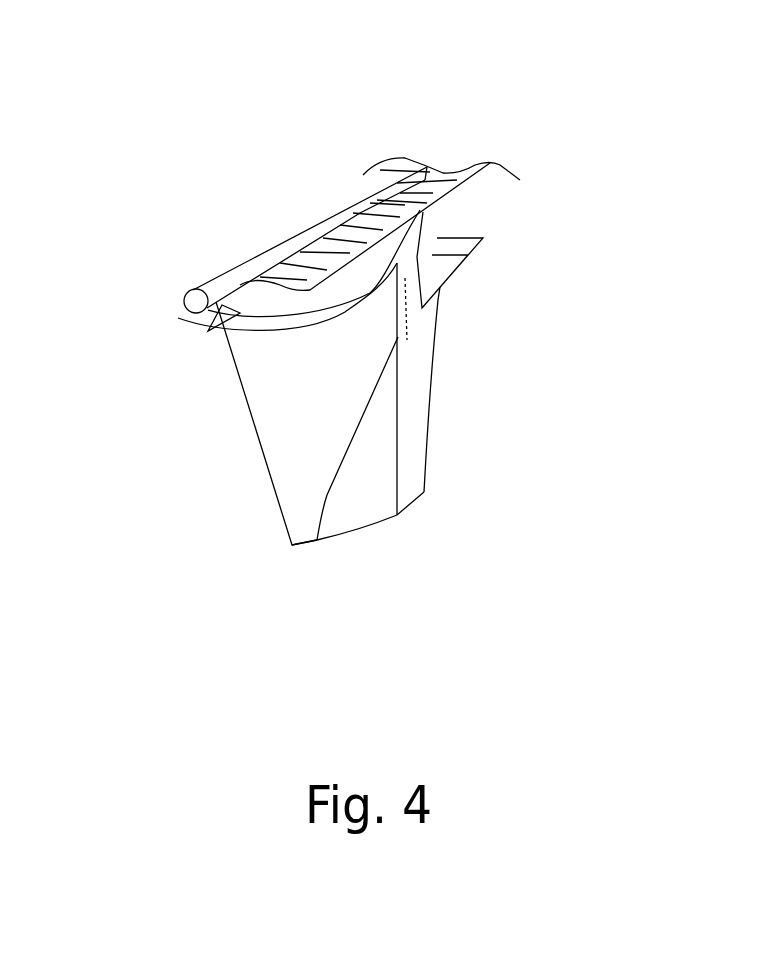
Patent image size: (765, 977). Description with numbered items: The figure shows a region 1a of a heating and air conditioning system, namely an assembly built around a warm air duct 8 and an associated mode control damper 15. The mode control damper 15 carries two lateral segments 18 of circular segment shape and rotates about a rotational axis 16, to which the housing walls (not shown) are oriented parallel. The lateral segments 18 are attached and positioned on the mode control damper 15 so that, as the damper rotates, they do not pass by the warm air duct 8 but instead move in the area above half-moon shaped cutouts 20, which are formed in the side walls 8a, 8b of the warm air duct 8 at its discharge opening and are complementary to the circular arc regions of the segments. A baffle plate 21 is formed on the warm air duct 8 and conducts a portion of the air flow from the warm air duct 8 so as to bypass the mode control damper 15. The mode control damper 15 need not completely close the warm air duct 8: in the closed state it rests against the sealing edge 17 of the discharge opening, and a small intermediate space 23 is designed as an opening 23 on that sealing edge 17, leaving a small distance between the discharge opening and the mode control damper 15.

The region of a heating and air conditioning system 1a is at (212, 198).
The warm air duct 8 is at (415, 407).
The side wall of warm air duct 8a is at (303, 393).
The side wall of warm air duct 8b is at (335, 320).
The mode control damper 15 is at (210, 325).
The rotational axis 16 is at (189, 291).
The sealing edge 17 is at (415, 240).
The lateral segments 18 is at (413, 240).
The half-moon shaped cutouts 20 is at (300, 318).
The baffle plate 21 is at (468, 250).
The intermediate space 23 is at (317, 540).